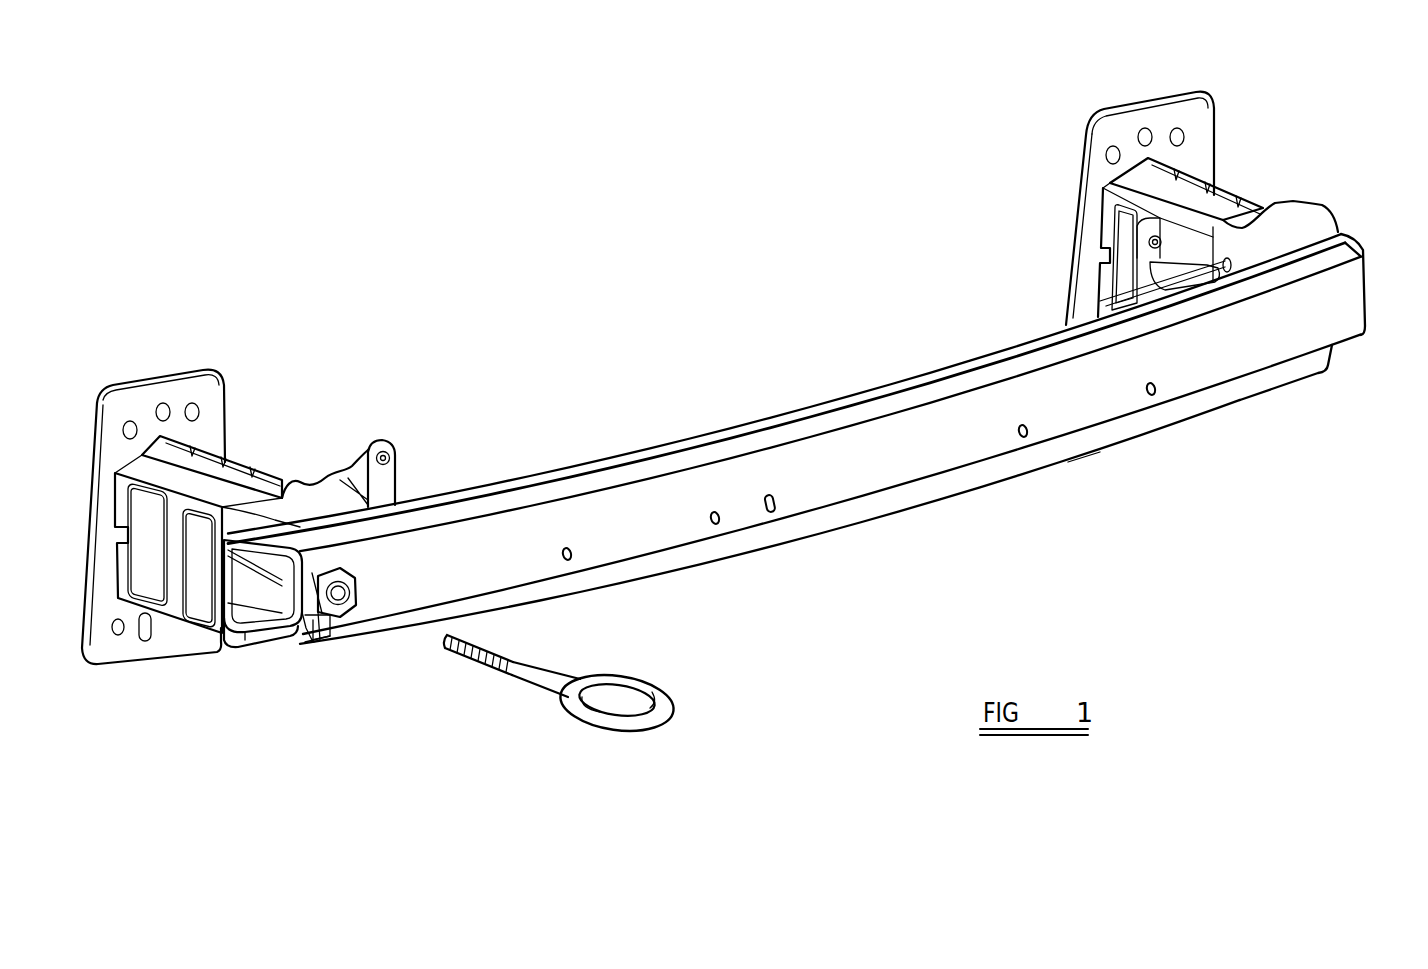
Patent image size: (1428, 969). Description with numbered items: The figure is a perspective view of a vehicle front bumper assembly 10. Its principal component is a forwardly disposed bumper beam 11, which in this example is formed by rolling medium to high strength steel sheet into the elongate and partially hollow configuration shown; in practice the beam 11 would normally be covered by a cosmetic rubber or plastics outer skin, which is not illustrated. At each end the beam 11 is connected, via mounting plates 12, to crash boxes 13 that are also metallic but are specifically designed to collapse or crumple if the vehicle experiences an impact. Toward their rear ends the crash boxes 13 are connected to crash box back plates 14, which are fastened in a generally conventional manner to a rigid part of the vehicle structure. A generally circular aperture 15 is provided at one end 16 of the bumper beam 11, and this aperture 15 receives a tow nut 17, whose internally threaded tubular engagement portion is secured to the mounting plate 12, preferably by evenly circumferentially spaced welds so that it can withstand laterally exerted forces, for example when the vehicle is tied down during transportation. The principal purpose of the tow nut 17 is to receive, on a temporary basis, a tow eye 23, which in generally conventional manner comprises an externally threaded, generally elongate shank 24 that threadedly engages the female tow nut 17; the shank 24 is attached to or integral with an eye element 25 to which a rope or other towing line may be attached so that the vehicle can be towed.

The vehicle front bumper assembly 10 is at (878, 525).
The bumper beam 11 is at (1068, 465).
The mounting plate 12 is at (288, 498).
The crash box 13 is at (240, 462).
The crash box back plate 14 is at (180, 388).
The aperture 15 is at (356, 577).
The end of the bumper beam 16 is at (382, 646).
The tow nut 17 is at (313, 642).
The tow eye 23 is at (600, 675).
The shank 24 is at (513, 660).
The eye element 25 is at (672, 697).